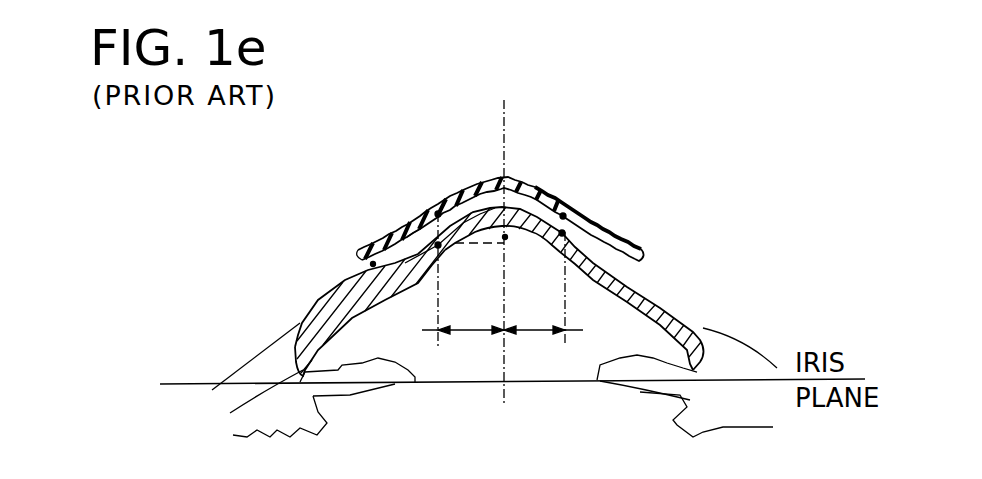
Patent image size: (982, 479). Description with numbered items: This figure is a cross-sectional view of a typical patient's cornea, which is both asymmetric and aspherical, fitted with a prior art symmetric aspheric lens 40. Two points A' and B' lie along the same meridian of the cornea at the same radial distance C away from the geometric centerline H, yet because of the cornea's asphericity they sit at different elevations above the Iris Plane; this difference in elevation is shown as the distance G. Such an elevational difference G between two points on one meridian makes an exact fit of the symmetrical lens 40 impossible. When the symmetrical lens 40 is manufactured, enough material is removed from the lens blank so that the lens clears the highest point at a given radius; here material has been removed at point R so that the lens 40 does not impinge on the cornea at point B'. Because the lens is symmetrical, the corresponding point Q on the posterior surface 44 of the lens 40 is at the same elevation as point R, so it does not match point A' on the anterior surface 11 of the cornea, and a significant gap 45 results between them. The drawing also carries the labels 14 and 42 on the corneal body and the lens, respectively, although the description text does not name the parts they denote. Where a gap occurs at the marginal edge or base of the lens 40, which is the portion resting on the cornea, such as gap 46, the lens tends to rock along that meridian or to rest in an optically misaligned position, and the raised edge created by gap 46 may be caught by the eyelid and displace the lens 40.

The anterior surface of the cornea 11 is at (318, 303).
The posterior lens surface 14 is at (352, 318).
The symmetric aspheric lens 40 is at (603, 228).
The haptic loop 42 is at (430, 207).
The posterior surface of the lens 44 is at (636, 264).
The gap 45 is at (437, 231).
The gap at the marginal edge 46 is at (372, 264).
The geometric centerline H is at (508, 114).
The point Q is at (438, 213).
The point R is at (563, 216).
The point A' is at (500, 280).
The point B' is at (593, 193).
The elevational difference G is at (506, 237).
The radial distance C is at (505, 331).